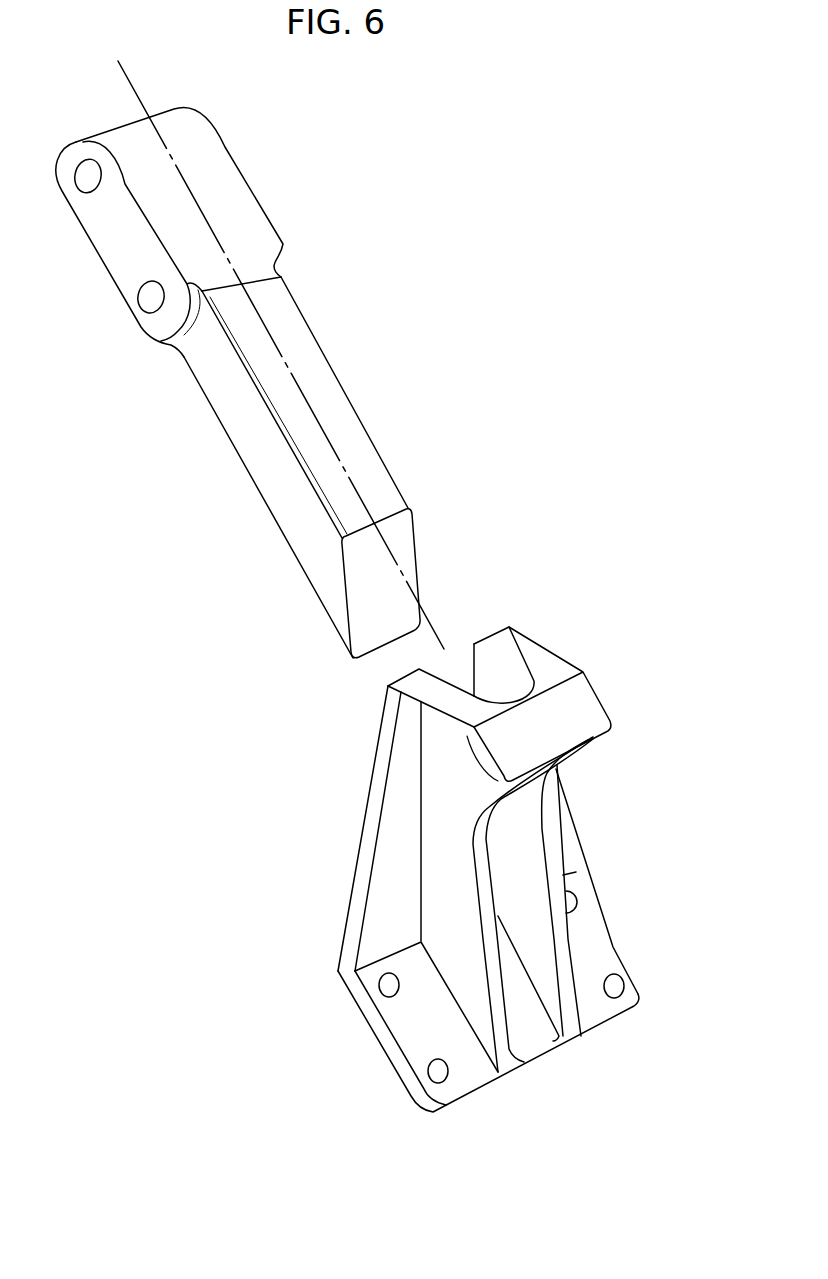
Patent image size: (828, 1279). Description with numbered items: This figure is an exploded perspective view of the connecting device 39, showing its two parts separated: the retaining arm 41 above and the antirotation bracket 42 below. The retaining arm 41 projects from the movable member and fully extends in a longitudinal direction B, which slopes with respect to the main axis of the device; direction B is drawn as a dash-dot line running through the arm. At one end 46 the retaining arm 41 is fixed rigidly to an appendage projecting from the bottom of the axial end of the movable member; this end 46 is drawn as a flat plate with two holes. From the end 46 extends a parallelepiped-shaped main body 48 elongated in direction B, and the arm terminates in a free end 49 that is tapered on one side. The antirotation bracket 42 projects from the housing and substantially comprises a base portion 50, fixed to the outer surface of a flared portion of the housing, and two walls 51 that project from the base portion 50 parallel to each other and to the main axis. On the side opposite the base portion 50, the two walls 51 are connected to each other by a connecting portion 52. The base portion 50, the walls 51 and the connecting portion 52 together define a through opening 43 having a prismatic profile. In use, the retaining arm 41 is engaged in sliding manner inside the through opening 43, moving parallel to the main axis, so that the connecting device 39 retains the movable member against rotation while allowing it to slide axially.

The longitudinal direction B is at (134, 80).
The connecting device 39 is at (386, 896).
The retaining arm 41 is at (328, 467).
The antirotation bracket 42 is at (405, 1033).
The through opening 43 is at (512, 860).
The end 46 is at (250, 208).
The main body 48 is at (340, 427).
The free end 49 is at (402, 557).
The base portion 50 is at (471, 1053).
The walls 51 is at (553, 829).
The connecting portion 52 is at (590, 703).